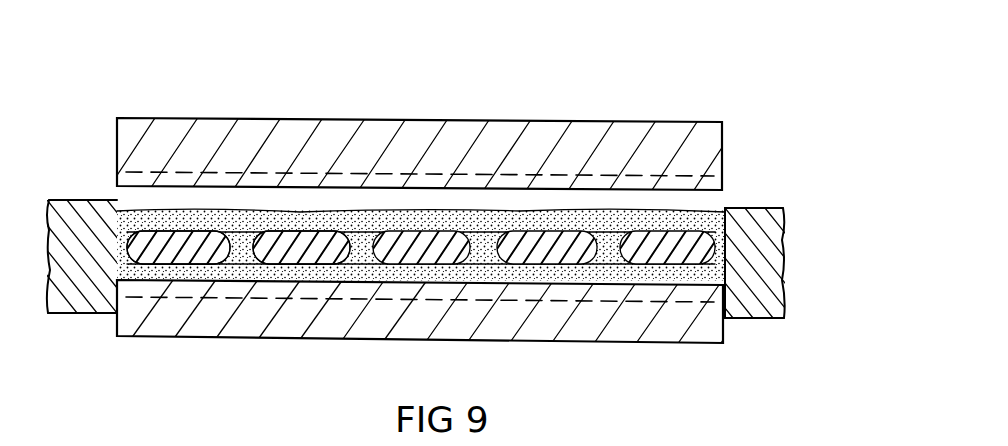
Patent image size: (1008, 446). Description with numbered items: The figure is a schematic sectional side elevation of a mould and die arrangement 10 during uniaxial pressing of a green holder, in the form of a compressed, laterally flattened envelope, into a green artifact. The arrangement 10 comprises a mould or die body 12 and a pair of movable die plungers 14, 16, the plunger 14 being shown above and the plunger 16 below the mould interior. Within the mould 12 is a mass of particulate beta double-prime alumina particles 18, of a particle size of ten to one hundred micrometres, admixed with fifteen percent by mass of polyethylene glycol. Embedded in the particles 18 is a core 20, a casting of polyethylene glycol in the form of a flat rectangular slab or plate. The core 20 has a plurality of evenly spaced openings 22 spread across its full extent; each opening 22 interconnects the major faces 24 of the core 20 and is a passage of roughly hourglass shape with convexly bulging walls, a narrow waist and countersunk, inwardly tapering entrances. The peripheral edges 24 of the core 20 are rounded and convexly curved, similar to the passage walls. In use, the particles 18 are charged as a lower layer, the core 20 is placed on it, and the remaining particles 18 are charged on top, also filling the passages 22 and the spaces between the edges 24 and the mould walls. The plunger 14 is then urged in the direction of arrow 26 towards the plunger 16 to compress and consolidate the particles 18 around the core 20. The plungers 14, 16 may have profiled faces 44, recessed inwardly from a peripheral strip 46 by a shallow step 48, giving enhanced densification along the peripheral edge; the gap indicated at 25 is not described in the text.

The mould and die arrangement 10 is at (636, 8).
The mould or die body 12 is at (758, 300).
The movable die plunger 14 is at (514, 135).
The movable die plunger 16 is at (508, 316).
The particulate β''-alumina particles 18 is at (212, 215).
The core 20 is at (556, 245).
The openings 22 is at (214, 246).
The major faces and peripheral edges of the core 24 is at (296, 214).
The gap 25 is at (736, 250).
The arrow 26 is at (432, 106).
The profiled faces 44 is at (366, 168).
The peripheral strip 46 is at (118, 192).
The shallow step 48 is at (736, 166).